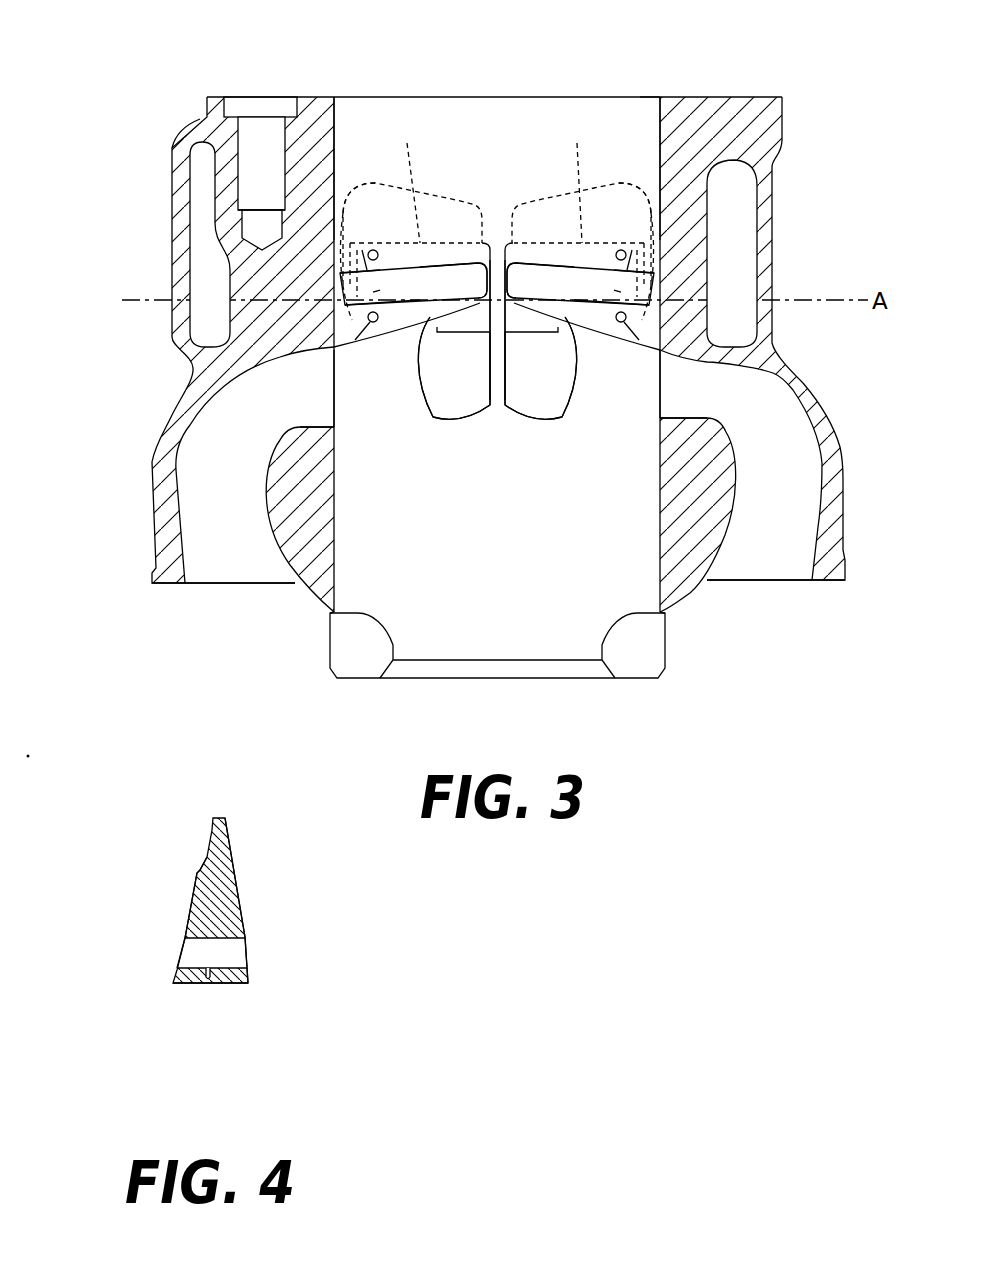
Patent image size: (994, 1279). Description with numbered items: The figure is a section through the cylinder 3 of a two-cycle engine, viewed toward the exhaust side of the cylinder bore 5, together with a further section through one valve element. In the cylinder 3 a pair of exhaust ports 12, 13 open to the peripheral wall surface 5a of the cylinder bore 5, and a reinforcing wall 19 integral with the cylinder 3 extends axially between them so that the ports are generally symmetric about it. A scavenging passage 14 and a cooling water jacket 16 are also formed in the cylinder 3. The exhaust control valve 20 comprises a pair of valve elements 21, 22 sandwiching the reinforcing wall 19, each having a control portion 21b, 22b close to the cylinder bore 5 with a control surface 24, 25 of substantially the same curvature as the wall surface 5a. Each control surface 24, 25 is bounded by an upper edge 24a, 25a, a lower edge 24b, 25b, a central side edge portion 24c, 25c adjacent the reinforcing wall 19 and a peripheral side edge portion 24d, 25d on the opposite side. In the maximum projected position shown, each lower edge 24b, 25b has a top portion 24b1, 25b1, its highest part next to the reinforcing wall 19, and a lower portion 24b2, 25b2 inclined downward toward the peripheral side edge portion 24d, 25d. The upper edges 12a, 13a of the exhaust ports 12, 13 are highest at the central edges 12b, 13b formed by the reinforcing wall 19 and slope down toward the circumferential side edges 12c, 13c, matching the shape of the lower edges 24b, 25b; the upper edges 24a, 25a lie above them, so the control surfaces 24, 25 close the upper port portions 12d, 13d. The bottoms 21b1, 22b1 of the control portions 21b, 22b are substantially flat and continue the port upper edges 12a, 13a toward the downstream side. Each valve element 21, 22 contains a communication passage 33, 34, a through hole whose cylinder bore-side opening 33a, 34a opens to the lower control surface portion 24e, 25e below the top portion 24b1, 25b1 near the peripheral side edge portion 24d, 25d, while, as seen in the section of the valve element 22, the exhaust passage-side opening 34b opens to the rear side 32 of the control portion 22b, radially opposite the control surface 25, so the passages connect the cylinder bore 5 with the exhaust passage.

In FIG. 3, the cylinder 3 is at (782, 115).
In FIG. 3, the cylinder bore 5 is at (600, 97).
In FIG. 3, the peripheral wall surface of the cylinder bore 5a is at (660, 108).
In FIG. 3, the exhaust port 12 is at (478, 420).
In FIG. 3, the upper edge of exhaust port 12a is at (432, 262).
In FIG. 3, the central edge of exhaust port 12b is at (488, 369).
In FIG. 3, the circumferential side edge of exhaust port 12c is at (327, 376).
In FIG. 3, the upper port portion 12d is at (373, 292).
In FIG. 3, the exhaust port 13 is at (538, 417).
In FIG. 3, the upper edge of exhaust port 13a is at (557, 262).
In FIG. 3, the central edge of exhaust port 13b is at (507, 370).
In FIG. 3, the circumferential side edge of exhaust port 13c is at (668, 348).
In FIG. 3, the upper port portion 13d is at (621, 292).
In FIG. 3, the scavenging passage 14 is at (235, 583).
In FIG. 3, the cooling water jacket 16 is at (733, 213).
In FIG. 3, the reinforcing wall 19 is at (516, 415).
In FIG. 3, the exhaust control valve 20 is at (496, 240).
In FIG. 3, the valve element 21 is at (400, 318).
In FIG. 3, the control portion 21b is at (375, 236).
In FIG. 3, the bottom of control portion 21b1 is at (457, 402).
In FIG. 3, the valve element 22 is at (594, 318).
In FIG. 3, the control portion 22b is at (618, 239).
In FIG. 4, the control portion 22b is at (250, 827).
In FIG. 3, the bottom of control portion 22b1 is at (542, 402).
In FIG. 4, the bottom of control portion 22b1 is at (223, 987).
In FIG. 3, the control surface 24 is at (383, 272).
In FIG. 3, the upper edge of control surface 24a is at (409, 178).
In FIG. 3, the lower edge of control surface 24b is at (389, 291).
In FIG. 3, the top portion of lower edge 24b1 is at (485, 305).
In FIG. 3, the lower portion of lower edge 24b2 is at (422, 395).
In FIG. 3, the central side edge portion 24c is at (462, 283).
In FIG. 3, the peripheral side edge portion 24d is at (480, 304).
In FIG. 3, the lower control surface portion 24e is at (397, 338).
In FIG. 3, the control surface 25 is at (616, 272).
In FIG. 4, the control surface 25 is at (245, 893).
In FIG. 3, the upper edge of control surface 25a is at (577, 181).
In FIG. 3, the lower edge of control surface 25b is at (609, 291).
In FIG. 3, the top portion of lower edge 25b1 is at (510, 305).
In FIG. 3, the lower portion of lower edge 25b2 is at (594, 412).
In FIG. 4, the lower portion of lower edge 25b2 is at (255, 987).
In FIG. 3, the central side edge portion 25c is at (533, 283).
In FIG. 3, the peripheral side edge portion 25d is at (514, 304).
In FIG. 3, the lower control surface portion 25e is at (615, 338).
In FIG. 4, the rear side of control portion 32 is at (190, 893).
In FIG. 3, the communication passage 33 is at (272, 398).
In FIG. 3, the cylinder bore-side opening 33a is at (407, 305).
In FIG. 3, the communication passage 34 is at (721, 398).
In FIG. 4, the communication passage 34 is at (203, 983).
In FIG. 3, the cylinder bore-side opening 34a is at (587, 305).
In FIG. 4, the cylinder bore-side opening 34a is at (248, 948).
In FIG. 4, the exhaust passage-side opening 34b is at (172, 953).